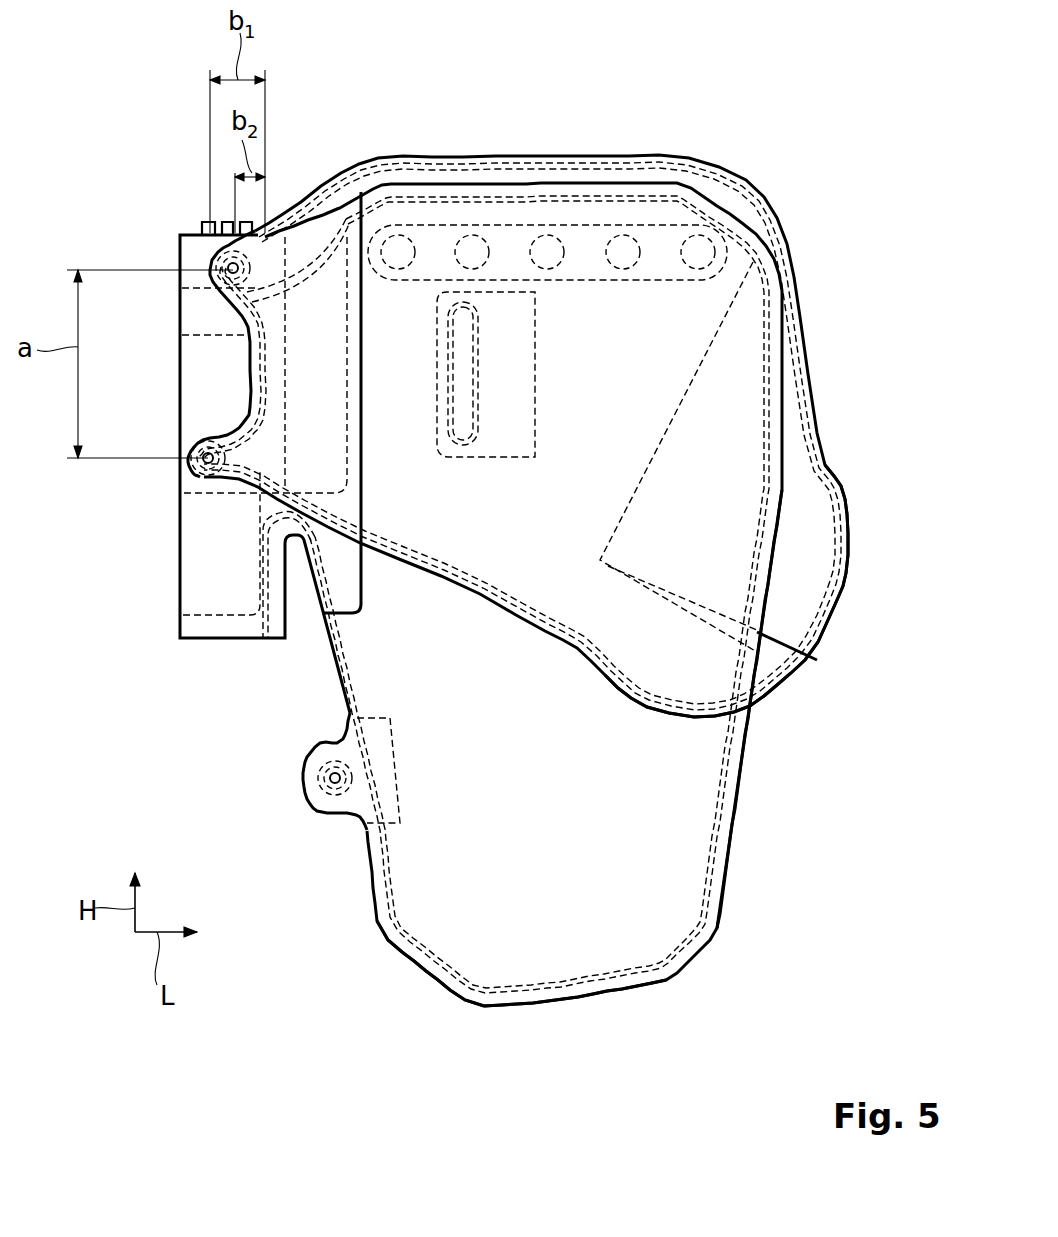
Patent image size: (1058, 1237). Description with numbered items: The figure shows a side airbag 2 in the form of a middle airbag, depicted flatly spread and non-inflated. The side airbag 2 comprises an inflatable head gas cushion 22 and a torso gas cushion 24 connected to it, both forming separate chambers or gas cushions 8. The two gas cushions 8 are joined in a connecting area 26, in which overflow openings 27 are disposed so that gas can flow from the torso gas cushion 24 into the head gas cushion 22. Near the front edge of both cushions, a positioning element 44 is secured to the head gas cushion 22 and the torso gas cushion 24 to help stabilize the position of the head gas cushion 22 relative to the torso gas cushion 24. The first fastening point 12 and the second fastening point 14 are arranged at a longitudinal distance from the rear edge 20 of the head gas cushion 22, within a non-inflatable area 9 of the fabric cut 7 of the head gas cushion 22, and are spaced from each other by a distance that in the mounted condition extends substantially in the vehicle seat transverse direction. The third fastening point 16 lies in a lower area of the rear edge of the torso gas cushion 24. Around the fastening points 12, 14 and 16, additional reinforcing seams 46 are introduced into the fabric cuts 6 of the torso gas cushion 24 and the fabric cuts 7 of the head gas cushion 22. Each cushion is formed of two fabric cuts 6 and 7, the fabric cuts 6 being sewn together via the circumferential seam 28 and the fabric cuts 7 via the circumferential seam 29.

The side airbag 2 is at (90, 243).
The fabric cuts of the torso gas cushion 6 is at (548, 968).
The fabric cuts of the head gas cushion 7 is at (767, 676).
The gas cushions 8 is at (541, 594).
The non-inflatable area 9 is at (238, 458).
The first fastening point 12 is at (200, 476).
The second fastening point 14 is at (205, 253).
The third fastening point 16 is at (320, 798).
The rear edge of the head gas cushion 20 is at (260, 367).
The head gas cushion 22 is at (783, 665).
The torso gas cushion 24 is at (688, 888).
The connecting area 26 is at (507, 243).
The overflow openings 27 is at (623, 247).
The circumferential seam of the torso gas cushion 28 is at (423, 972).
The circumferential seam of the head gas cushion 29 is at (642, 693).
The positioning element 44 is at (822, 599).
The reinforcing seams 46 is at (232, 310).